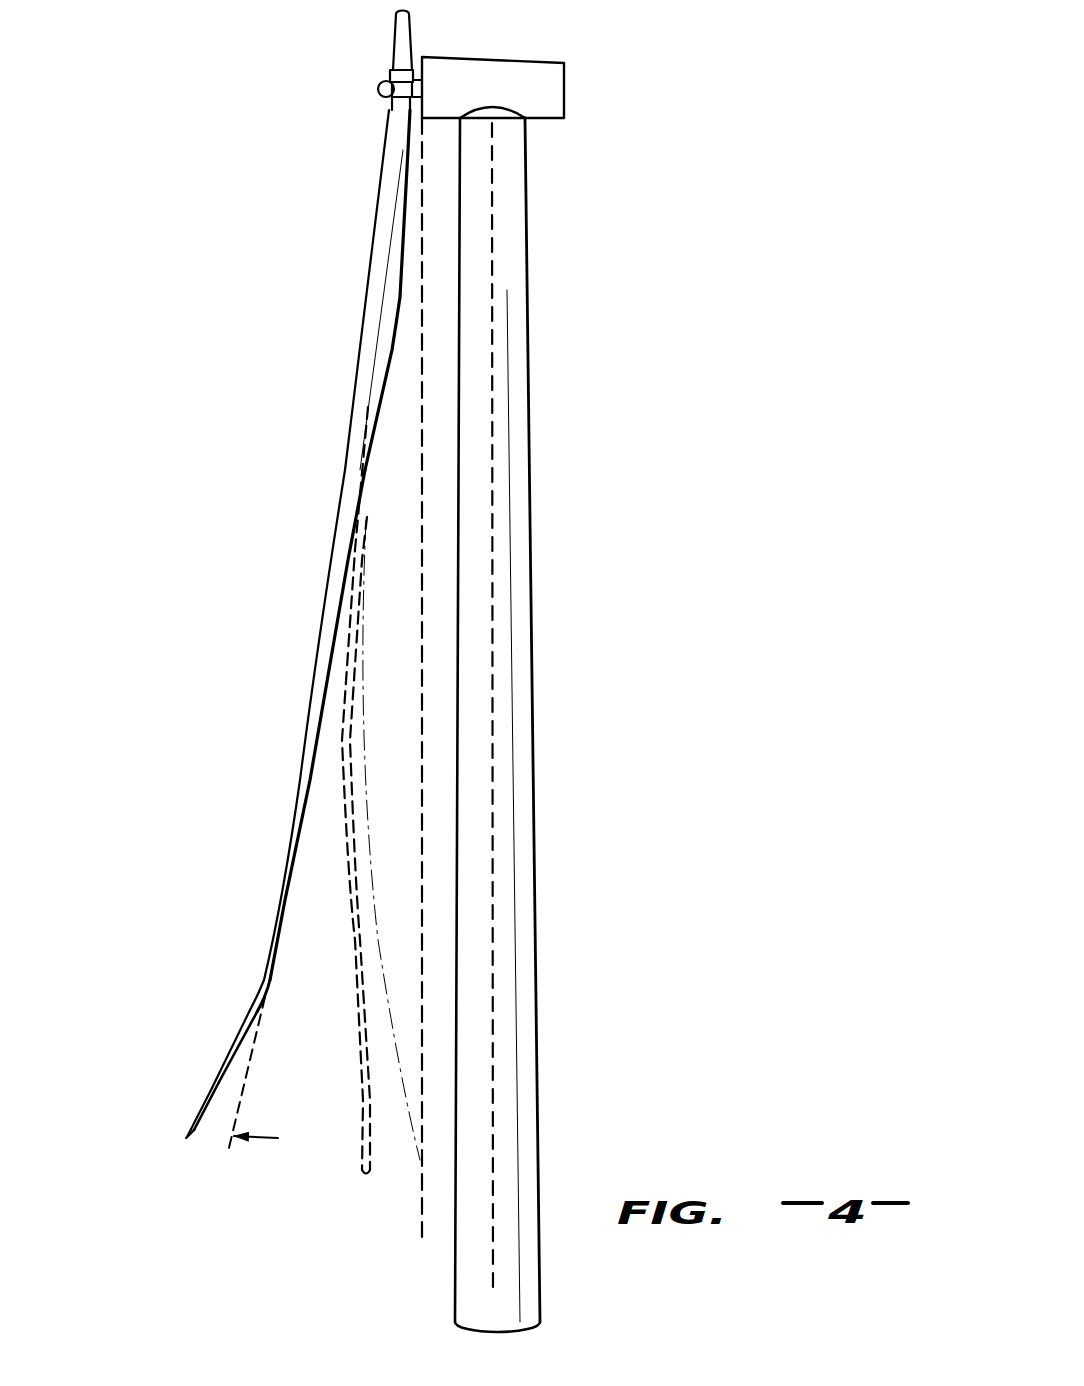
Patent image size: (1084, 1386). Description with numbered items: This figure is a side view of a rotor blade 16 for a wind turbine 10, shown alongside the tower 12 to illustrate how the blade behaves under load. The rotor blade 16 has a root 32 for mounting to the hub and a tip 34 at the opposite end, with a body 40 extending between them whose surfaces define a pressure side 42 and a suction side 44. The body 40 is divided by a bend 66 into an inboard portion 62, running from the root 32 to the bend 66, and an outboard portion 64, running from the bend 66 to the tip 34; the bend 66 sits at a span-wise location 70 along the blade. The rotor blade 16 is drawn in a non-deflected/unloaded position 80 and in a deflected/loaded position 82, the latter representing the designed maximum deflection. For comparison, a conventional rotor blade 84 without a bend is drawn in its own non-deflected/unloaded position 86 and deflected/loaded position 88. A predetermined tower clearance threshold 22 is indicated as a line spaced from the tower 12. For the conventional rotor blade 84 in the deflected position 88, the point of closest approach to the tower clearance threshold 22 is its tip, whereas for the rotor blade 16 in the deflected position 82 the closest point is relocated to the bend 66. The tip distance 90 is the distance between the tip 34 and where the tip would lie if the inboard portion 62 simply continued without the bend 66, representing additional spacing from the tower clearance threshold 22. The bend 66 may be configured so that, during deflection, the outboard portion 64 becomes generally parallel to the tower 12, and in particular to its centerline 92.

The wind turbine 10 is at (664, 133).
The tower 12 is at (518, 535).
The rotor blade 16 is at (325, 272).
The tower clearance threshold 22 is at (422, 1217).
The root 32 is at (378, 113).
The tip 34 is at (183, 1140).
The body 40 is at (362, 395).
The pressure side 42 is at (365, 318).
The suction side 44 is at (400, 303).
The inboard portion 62 is at (308, 728).
The outboard portion 64 is at (207, 1077).
The bend 66 is at (268, 982).
The span-wise location 70 is at (247, 988).
The non-deflected/unloaded position 80 is at (180, 1152).
The deflected/loaded position 82 is at (360, 1183).
The conventional rotor blade 84 is at (387, 685).
The non-deflected/unloaded position of conventional rotor blade 86 is at (243, 1153).
The deflected/loaded position of conventional rotor blade 88 is at (417, 1163).
The tip distance 90 is at (190, 1120).
The centerline 92 is at (493, 917).